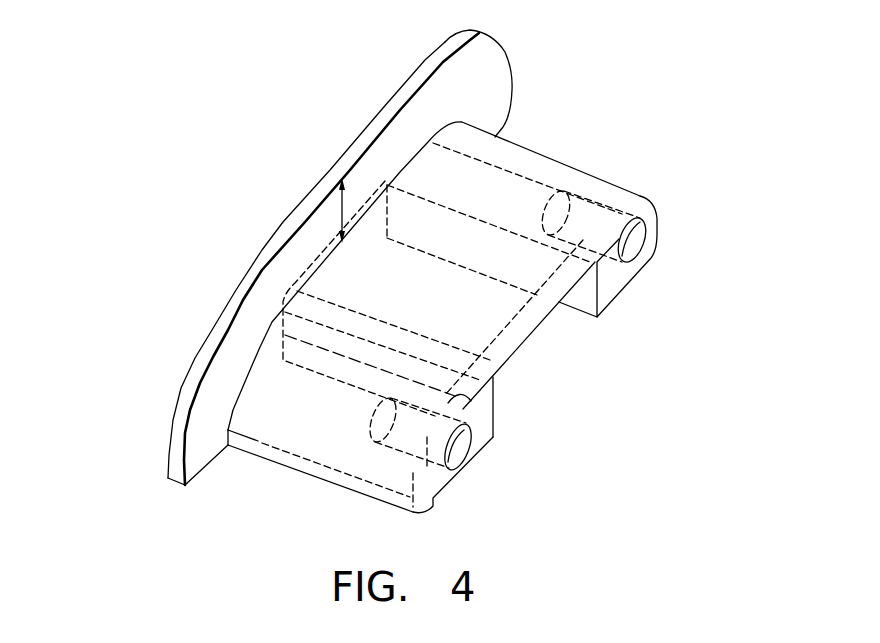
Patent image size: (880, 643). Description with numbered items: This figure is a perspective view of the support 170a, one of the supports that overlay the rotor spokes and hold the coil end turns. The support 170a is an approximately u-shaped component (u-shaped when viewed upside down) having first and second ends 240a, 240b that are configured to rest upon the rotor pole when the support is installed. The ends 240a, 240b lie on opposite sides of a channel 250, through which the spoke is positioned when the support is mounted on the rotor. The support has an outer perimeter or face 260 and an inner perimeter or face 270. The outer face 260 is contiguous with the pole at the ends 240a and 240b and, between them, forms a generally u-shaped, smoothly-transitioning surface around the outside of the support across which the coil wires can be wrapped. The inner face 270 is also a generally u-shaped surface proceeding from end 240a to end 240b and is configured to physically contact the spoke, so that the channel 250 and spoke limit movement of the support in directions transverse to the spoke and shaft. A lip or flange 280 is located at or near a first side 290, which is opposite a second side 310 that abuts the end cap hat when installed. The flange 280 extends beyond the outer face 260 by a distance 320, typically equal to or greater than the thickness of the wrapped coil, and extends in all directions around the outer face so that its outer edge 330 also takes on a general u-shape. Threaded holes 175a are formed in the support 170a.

The support 170a is at (610, 87).
The threaded holes 175a is at (641, 252).
The first end 240a is at (468, 475).
The second end 240b is at (623, 283).
The channel 250 is at (541, 371).
The outer face 260 is at (330, 421).
The inner face 270 is at (582, 300).
The flange 280 is at (437, 55).
The first side 290 is at (180, 383).
The second side 310 is at (447, 483).
The distance 320 is at (340, 212).
The outer edge 330 is at (347, 157).